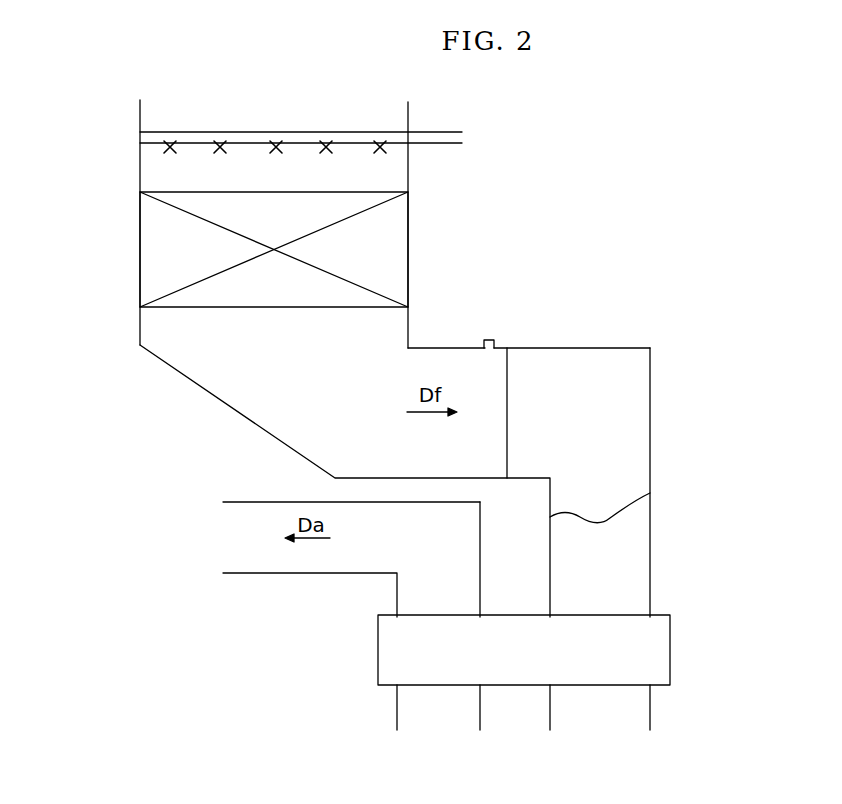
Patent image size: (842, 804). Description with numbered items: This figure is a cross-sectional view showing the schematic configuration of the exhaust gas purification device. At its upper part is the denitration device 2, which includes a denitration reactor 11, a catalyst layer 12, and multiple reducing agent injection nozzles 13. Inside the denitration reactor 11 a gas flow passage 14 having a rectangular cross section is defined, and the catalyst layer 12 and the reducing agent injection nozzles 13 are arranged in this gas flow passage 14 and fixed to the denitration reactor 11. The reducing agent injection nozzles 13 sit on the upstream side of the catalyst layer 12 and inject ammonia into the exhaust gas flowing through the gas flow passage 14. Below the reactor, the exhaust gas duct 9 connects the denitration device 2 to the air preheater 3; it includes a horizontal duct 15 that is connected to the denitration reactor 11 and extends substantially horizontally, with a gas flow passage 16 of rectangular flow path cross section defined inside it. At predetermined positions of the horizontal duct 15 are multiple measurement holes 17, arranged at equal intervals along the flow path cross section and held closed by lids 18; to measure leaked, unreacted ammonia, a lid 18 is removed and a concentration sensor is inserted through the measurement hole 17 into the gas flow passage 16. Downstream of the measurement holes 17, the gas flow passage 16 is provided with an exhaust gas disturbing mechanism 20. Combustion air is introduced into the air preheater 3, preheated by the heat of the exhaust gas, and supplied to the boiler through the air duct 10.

The denitration device 2 is at (108, 136).
The air preheater 3 is at (662, 614).
The exhaust gas duct 9 is at (645, 348).
The air duct 10 is at (317, 576).
The denitration reactor 11 is at (140, 160).
The catalyst layer 12 is at (148, 245).
The reducing agent injection nozzles 13 is at (172, 145).
The gas flow passage 14 is at (241, 188).
The horizontal duct 15 is at (440, 348).
The gas flow passage 16 is at (446, 456).
The measurement holes 17 is at (497, 347).
The lids 18 is at (489, 340).
The exhaust gas disturbing mechanism 20 is at (510, 385).